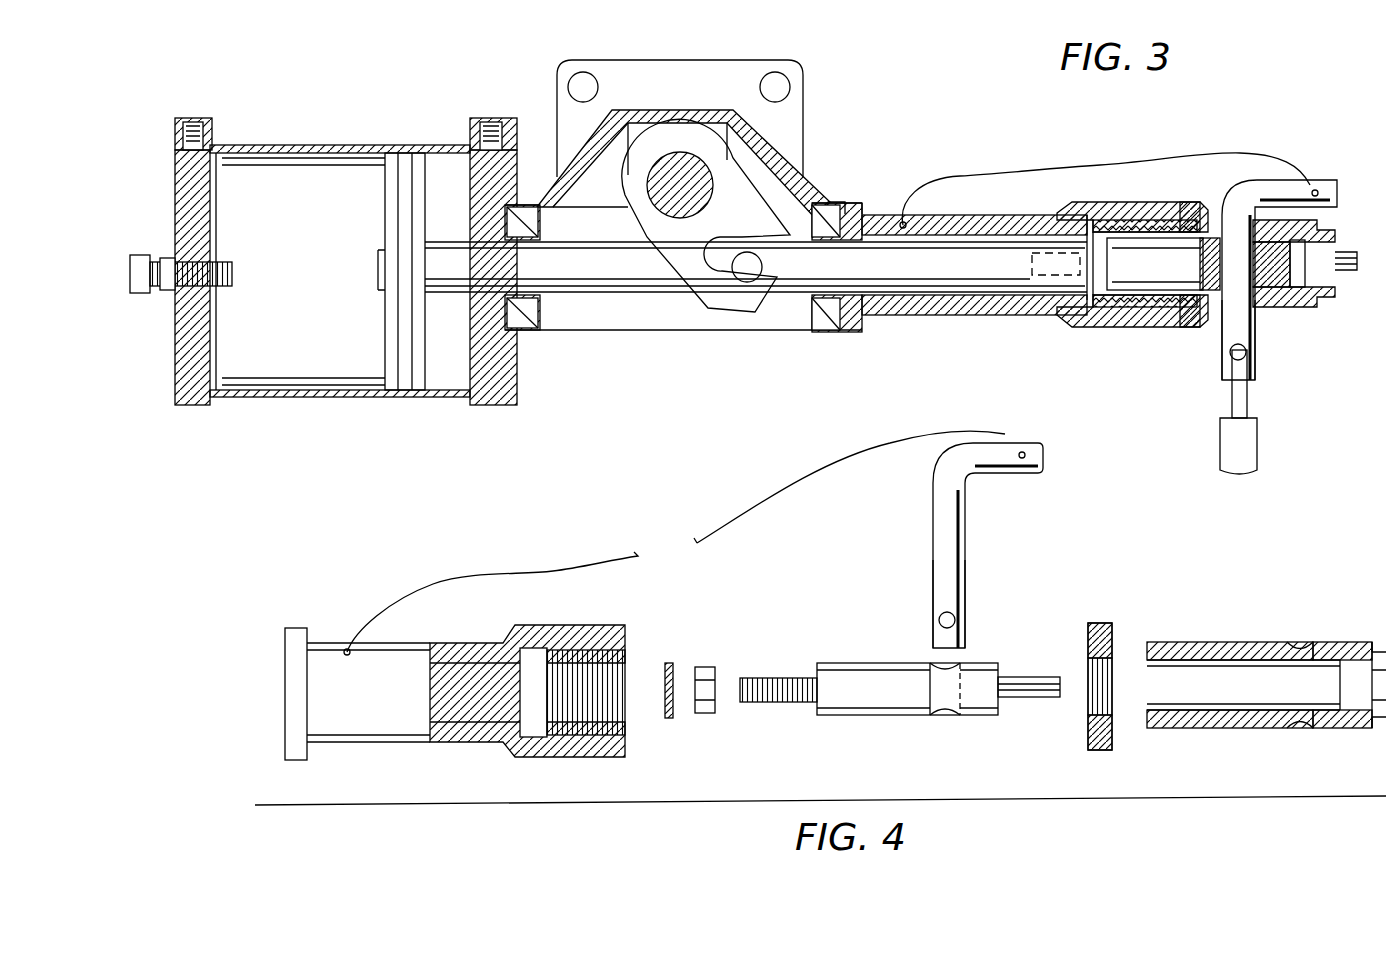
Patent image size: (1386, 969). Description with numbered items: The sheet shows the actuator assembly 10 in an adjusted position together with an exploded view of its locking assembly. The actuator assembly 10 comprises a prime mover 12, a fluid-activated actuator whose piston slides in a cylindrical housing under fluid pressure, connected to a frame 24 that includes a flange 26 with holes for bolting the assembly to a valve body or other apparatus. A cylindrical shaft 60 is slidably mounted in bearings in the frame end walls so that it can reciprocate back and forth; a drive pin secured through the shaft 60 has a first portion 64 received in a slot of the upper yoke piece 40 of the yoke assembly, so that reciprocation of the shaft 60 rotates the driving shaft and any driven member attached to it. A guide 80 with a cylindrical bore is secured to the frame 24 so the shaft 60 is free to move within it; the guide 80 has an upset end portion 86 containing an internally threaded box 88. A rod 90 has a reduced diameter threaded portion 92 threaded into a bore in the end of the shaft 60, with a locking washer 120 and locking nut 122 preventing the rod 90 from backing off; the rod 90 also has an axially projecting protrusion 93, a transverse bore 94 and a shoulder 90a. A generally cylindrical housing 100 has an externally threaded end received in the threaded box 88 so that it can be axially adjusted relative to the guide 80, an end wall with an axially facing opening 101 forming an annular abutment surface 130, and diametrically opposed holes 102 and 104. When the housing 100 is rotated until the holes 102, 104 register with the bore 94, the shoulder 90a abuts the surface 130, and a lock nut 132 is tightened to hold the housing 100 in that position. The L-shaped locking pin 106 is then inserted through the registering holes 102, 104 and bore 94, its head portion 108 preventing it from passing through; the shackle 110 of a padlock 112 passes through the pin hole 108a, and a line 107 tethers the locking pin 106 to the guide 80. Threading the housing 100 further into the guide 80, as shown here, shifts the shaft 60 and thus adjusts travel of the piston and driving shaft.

In FIG. 3, the actuator assembly 10 is at (840, 66).
In FIG. 3, the prime mover 12 is at (333, 140).
In FIG. 3, the frame 24 is at (822, 172).
In FIG. 3, the flange 26 is at (660, 75).
In FIG. 3, the upper yoke piece 40 is at (681, 255).
In FIG. 3, the cylindrical shaft 60 is at (590, 262).
In FIG. 3, the first portion of drive pin 64 is at (762, 282).
In FIG. 3, the guide 80 is at (970, 230).
In FIG. 4, the guide 80 is at (452, 740).
In FIG. 3, the upset end portion 86 is at (1140, 212).
In FIG. 4, the upset end portion 86 is at (565, 757).
In FIG. 4, the internally threaded box 88 is at (610, 716).
In FIG. 4, the rod 90 is at (862, 663).
In FIG. 4, the shoulder 90a is at (1000, 664).
In FIG. 3, the reduced diameter threaded portion 92 is at (1030, 272).
In FIG. 4, the reduced diameter threaded portion 92 is at (775, 703).
In FIG. 4, the axially projecting protrusion 93 is at (1040, 676).
In FIG. 4, the transverse bore 94 is at (935, 692).
In FIG. 3, the housing 100 is at (1335, 300).
In FIG. 4, the housing 100 is at (1325, 641).
In FIG. 4, the axially facing opening 101 is at (1375, 663).
In FIG. 4, the hole 102 is at (1296, 645).
In FIG. 4, the hole 104 is at (1292, 729).
In FIG. 3, the locking pin 106 is at (1250, 322).
In FIG. 4, the locking pin 106 is at (965, 522).
In FIG. 3, the line 107 is at (1113, 162).
In FIG. 4, the line 107 is at (552, 573).
In FIG. 3, the head portion 108 is at (1278, 185).
In FIG. 4, the head portion 108 is at (1040, 445).
In FIG. 3, the lever hole 108a is at (1228, 377).
In FIG. 4, the lever hole 108a is at (938, 613).
In FIG. 3, the shackle 110 is at (1249, 402).
In FIG. 3, the padlock 112 is at (1254, 453).
In FIG. 4, the locking washer 120 is at (668, 663).
In FIG. 4, the locking nut 122 is at (707, 667).
In FIG. 4, the abutment surface 130 is at (1335, 706).
In FIG. 3, the lock nut 132 is at (1192, 328).
In FIG. 4, the lock nut 132 is at (1096, 624).